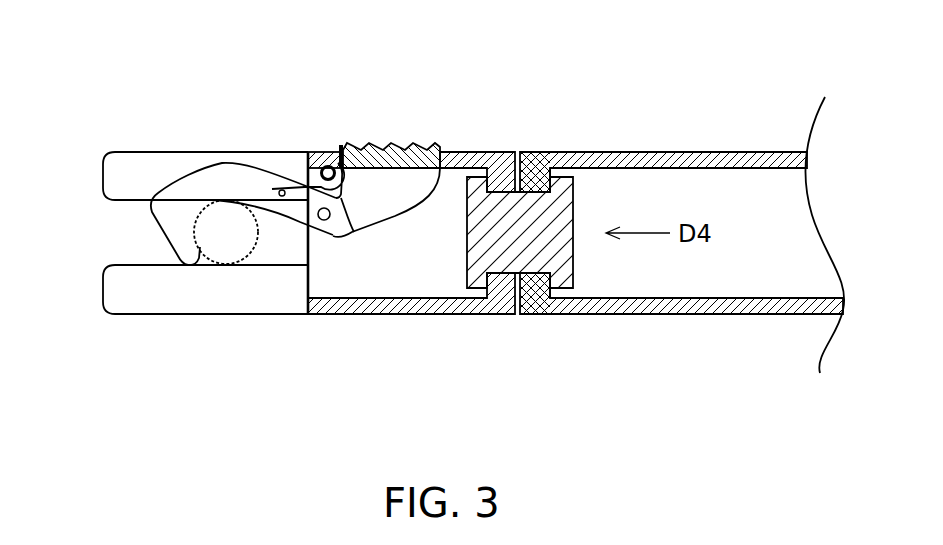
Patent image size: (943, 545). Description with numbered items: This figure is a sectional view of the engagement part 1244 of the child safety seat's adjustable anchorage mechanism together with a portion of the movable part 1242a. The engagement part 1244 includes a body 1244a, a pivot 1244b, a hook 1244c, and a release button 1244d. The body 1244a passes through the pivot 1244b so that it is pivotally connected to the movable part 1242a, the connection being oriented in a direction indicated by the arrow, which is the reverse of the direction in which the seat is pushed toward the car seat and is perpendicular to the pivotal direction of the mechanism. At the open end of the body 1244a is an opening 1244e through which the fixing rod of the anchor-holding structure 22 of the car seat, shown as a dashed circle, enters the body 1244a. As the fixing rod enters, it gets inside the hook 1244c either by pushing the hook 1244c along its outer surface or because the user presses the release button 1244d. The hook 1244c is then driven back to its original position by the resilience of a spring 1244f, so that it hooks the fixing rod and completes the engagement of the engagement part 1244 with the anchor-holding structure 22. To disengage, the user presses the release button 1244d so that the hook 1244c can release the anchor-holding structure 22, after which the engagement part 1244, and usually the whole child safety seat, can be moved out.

The engagement part 1244 is at (478, 120).
The body 1244a is at (393, 305).
The pivot 1244b is at (505, 253).
The hook 1244c is at (193, 190).
The release button 1244d is at (389, 148).
The opening 1244e is at (109, 227).
The spring 1244f is at (303, 185).
The movable part 1242a is at (688, 305).
The anchor-holding structure 22 is at (203, 266).